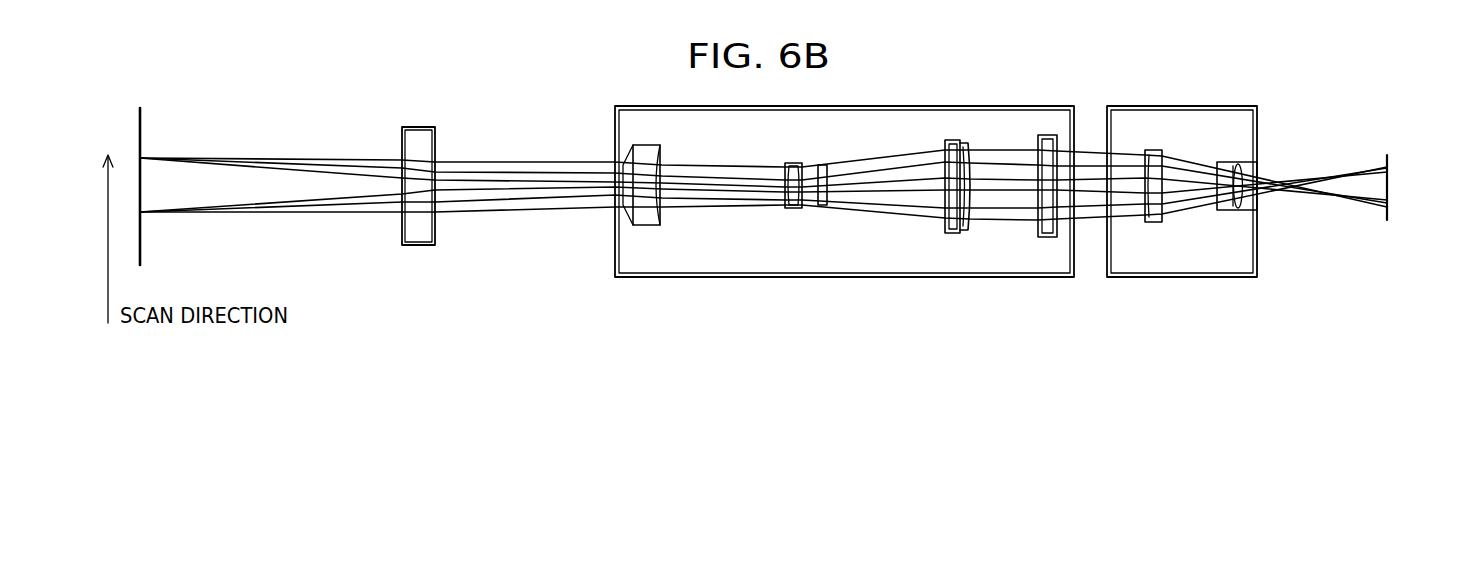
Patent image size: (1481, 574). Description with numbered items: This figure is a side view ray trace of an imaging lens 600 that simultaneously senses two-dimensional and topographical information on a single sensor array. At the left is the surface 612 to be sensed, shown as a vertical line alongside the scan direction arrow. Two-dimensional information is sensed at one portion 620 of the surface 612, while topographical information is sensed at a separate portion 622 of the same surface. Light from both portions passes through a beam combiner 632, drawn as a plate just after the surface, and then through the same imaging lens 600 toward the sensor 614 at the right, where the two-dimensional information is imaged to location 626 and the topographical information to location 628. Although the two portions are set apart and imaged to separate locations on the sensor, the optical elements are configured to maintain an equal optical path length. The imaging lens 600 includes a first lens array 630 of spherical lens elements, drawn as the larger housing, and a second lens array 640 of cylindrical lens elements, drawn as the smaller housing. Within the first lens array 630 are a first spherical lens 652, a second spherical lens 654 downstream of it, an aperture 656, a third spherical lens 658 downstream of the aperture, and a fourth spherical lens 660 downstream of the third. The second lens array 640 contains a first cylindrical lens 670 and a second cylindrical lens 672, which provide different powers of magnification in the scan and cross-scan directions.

The imaging lens 600 is at (1093, 90).
The surface 612 is at (137, 128).
The sensor 614 is at (1387, 155).
The portion of surface 620 is at (763, 129).
The portion of surface 622 is at (763, 220).
The location on sensor 626 is at (1428, 234).
The location on sensor 628 is at (1423, 134).
The first lens array 630 is at (616, 253).
The beam combiner 632 is at (402, 218).
The second lens array 640 is at (1215, 277).
The first spherical lens 652 is at (650, 146).
The second spherical lens 654 is at (792, 163).
The aperture 656 is at (827, 206).
The third spherical lens 658 is at (947, 223).
The fourth spherical lens 660 is at (1040, 228).
The first cylindrical lens 670 is at (1160, 222).
The second cylindrical lens 672 is at (1243, 162).